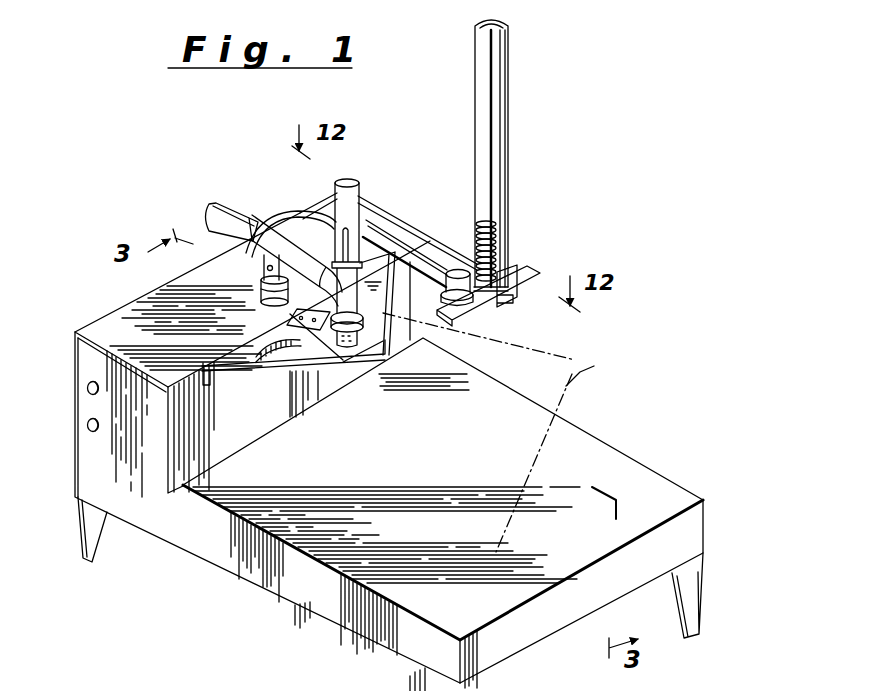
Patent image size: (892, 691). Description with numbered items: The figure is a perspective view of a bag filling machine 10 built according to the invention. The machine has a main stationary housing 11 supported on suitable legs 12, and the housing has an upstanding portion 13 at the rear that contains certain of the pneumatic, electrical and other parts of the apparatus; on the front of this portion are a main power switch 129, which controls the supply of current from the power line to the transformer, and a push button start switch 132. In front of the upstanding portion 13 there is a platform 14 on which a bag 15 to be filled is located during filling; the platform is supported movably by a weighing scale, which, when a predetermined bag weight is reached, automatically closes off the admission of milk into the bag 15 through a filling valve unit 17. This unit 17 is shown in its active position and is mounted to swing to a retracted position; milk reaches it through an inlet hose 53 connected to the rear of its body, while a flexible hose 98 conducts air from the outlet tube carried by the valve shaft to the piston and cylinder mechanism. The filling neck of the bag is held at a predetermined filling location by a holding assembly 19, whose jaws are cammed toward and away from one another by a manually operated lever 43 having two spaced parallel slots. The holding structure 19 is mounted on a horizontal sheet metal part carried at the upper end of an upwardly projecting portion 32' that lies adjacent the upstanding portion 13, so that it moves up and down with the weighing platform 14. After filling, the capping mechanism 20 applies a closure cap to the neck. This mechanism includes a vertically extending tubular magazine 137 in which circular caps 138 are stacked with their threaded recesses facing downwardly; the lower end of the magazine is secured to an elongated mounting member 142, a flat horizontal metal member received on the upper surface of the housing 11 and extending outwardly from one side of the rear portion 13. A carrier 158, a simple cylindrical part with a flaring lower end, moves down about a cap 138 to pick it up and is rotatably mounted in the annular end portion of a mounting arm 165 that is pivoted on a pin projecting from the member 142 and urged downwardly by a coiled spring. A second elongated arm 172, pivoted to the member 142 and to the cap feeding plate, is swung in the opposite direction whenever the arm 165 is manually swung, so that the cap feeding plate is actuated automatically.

The bag filling machine 10 is at (637, 406).
The main stationary housing 11 is at (152, 556).
The legs 12 is at (700, 589).
The upstanding portion 13 is at (98, 318).
The platform 14 is at (651, 487).
The bag 15 is at (594, 367).
The filling valve unit 17 is at (365, 237).
The holding assembly 19 is at (335, 365).
The capping mechanism 20 is at (521, 245).
The upwardly projecting portion 32' is at (301, 410).
The manually operated lever 43 is at (257, 362).
The inlet hose 53 is at (236, 216).
The flexible hose 98 is at (286, 214).
The main power switch 129 is at (90, 428).
The push button start switch 132 is at (87, 387).
The tubular magazine 137 is at (506, 212).
The caps 138 is at (489, 241).
The elongated mounting member 142 is at (332, 186).
The carrier 158 is at (461, 296).
The mounting arm 165 is at (400, 229).
The second elongated arm 172 is at (437, 247).